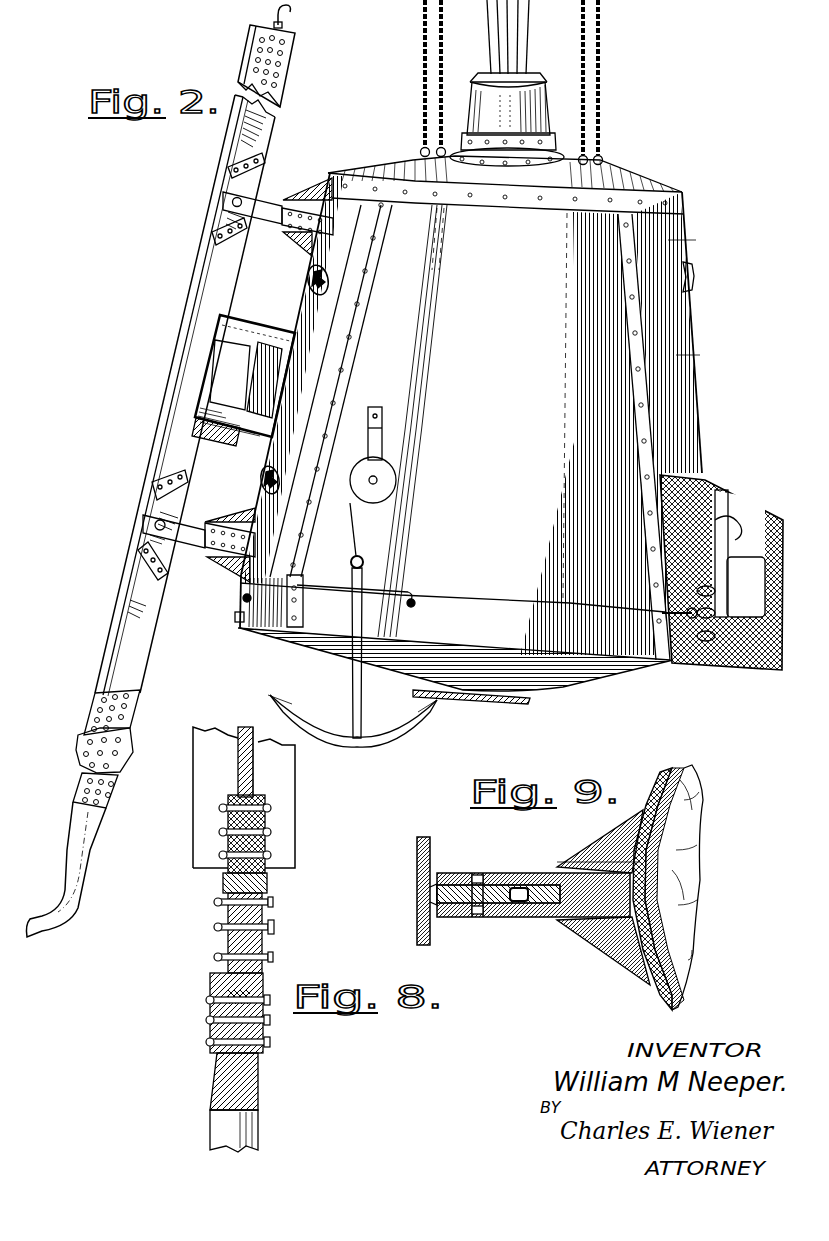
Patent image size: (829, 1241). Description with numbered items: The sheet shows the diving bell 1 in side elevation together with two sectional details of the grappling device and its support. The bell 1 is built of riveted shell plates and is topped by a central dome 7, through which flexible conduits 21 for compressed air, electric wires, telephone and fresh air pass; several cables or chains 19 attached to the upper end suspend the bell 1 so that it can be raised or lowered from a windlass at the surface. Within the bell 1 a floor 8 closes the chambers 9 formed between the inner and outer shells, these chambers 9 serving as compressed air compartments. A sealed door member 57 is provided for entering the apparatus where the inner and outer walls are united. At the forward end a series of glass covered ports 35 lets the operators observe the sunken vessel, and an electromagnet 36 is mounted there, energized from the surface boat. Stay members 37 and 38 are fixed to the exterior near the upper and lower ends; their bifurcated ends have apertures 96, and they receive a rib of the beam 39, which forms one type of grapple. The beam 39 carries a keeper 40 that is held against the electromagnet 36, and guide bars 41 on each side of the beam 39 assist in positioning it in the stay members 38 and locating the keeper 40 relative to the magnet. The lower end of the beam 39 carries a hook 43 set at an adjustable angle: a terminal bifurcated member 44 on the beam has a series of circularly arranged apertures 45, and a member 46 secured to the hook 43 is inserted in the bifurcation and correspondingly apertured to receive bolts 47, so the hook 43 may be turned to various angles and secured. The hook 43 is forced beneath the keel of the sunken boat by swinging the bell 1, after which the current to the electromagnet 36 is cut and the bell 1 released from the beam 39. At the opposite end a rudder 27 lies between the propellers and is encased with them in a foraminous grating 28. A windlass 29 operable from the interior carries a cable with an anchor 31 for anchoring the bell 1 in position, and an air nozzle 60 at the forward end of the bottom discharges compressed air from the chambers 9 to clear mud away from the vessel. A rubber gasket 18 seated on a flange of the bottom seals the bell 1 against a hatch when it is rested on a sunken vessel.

In FIG. 2, the bell 1 is at (470, 423).
In FIG. 9, the bell 1 is at (688, 778).
In FIG. 2, the central dome 7 is at (507, 119).
In FIG. 2, the floor 8 is at (126, 684).
In FIG. 2, the chambers 9 is at (146, 522).
In FIG. 2, the rubber gasket 18 is at (383, 402).
In FIG. 2, the cables or chains 19 is at (423, 63).
In FIG. 2, the flexible conduits 21 is at (488, 33).
In FIG. 2, the rudder 27 is at (713, 565).
In FIG. 2, the foraminous grating 28 is at (765, 663).
In FIG. 2, the windlass 29 is at (398, 485).
In FIG. 2, the anchor 31 is at (347, 722).
In FIG. 2, the glass covered ports 35 is at (307, 279).
In FIG. 2, the electromagnet 36 is at (223, 420).
In FIG. 2, the stay member 37 is at (268, 200).
In FIG. 2, the stay member 38 is at (192, 548).
In FIG. 9, the stay member 38 is at (532, 918).
In FIG. 2, the beam 39 is at (147, 630).
In FIG. 9, the beam 39 is at (416, 890).
In FIG. 2, the keeper 40 is at (215, 343).
In FIG. 2, the guide bars 41 is at (158, 482).
In FIG. 2, the hook 43 is at (66, 915).
In FIG. 8, the hook 43 is at (216, 1104).
In FIG. 2, the terminal bifurcated member 44 is at (131, 714).
In FIG. 8, the terminal bifurcated member 44 is at (224, 877).
In FIG. 2, the apertures 45 is at (124, 757).
In FIG. 2, the member 46 is at (108, 790).
In FIG. 8, the member 46 is at (213, 1013).
In FIG. 8, the bolts 47 is at (268, 902).
In FIG. 2, the sealed door member 57 is at (690, 328).
In FIG. 2, the air nozzle 60 is at (236, 624).
In FIG. 2, the apertures 96 is at (233, 202).
In FIG. 9, the apertures 96 is at (477, 918).